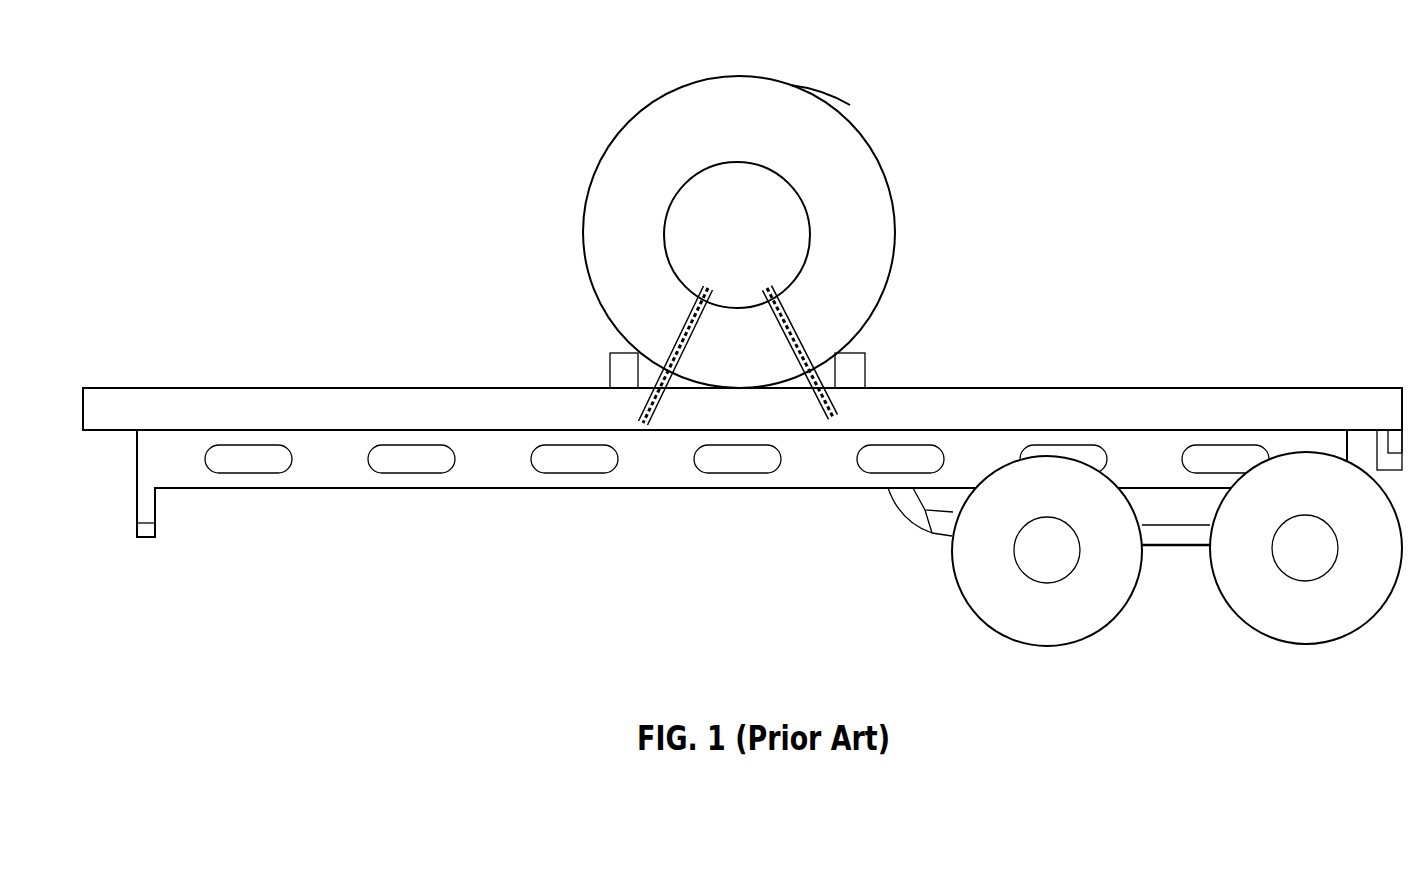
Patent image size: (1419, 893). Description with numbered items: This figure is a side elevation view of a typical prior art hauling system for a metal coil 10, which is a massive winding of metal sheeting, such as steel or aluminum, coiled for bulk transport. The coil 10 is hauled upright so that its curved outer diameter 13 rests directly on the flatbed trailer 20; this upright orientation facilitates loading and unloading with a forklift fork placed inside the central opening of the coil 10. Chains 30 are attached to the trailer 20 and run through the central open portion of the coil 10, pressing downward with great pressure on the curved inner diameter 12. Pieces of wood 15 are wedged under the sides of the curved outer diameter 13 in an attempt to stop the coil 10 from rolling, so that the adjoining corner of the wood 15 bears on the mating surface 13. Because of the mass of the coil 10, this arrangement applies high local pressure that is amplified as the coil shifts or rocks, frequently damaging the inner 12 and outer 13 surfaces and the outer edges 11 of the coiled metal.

The metal coil 10 is at (716, 203).
The outer edges 11 is at (712, 120).
The curved inner diameter 12 is at (672, 255).
The curved outer diameter 13 is at (838, 112).
The pieces of wood 15 is at (870, 367).
The flatbed trailer 20 is at (345, 570).
The chains 30 is at (657, 410).